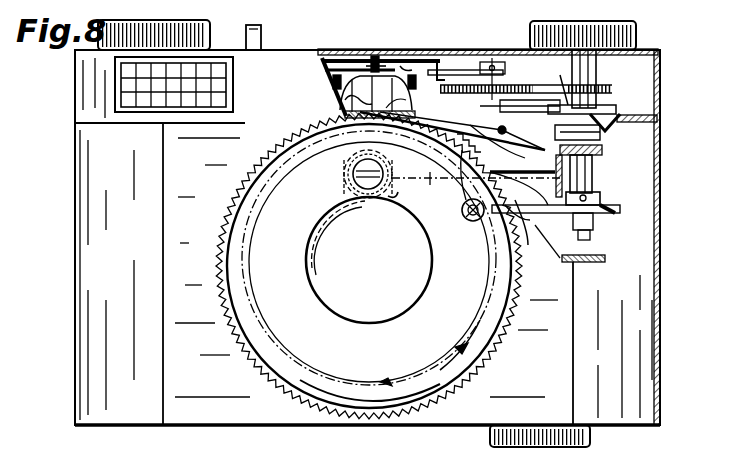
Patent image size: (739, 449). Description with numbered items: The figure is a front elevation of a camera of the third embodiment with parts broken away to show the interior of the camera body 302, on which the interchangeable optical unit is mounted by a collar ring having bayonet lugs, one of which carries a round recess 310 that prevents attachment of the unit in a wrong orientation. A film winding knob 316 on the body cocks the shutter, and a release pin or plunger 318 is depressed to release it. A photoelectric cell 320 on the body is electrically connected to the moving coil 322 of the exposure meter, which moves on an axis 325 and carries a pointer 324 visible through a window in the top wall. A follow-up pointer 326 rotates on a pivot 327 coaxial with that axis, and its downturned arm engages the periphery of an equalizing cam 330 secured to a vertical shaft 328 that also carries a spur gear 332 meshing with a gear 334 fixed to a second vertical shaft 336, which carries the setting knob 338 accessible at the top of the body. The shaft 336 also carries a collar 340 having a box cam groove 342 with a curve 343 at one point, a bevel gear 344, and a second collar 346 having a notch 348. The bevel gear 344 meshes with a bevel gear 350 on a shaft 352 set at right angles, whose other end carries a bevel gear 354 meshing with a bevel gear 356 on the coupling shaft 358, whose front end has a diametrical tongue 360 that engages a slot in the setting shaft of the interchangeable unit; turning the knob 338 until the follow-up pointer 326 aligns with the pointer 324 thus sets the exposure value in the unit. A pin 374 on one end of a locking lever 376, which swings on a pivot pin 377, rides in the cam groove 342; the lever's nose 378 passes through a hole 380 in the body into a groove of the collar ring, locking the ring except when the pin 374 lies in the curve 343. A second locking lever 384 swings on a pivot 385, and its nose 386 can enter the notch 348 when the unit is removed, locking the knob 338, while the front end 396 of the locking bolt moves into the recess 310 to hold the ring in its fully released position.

The camera body 302 is at (90, 92).
The round recess 310 is at (460, 345).
The film winding knob 316 is at (205, 34).
The release pin or plunger 318 is at (258, 28).
The photoelectric cell 320 is at (143, 102).
The moving coil 322 is at (332, 88).
The pointer 324 is at (330, 58).
The axis 325 is at (350, 56).
The follow-up pointer 326 is at (413, 58).
The pivot 327 is at (375, 58).
The vertical shaft 328 is at (500, 70).
The equalizing cam 330 is at (450, 58).
The spur gear 332 is at (472, 58).
The gear 334 is at (560, 96).
The vertical shaft 336 is at (600, 66).
The setting knob 338 is at (630, 33).
The collar 340 is at (610, 135).
The box cam groove 342 is at (616, 128).
The curve 343 is at (604, 148).
The bevel gear 344 is at (589, 176).
The second collar 346 is at (602, 205).
The notch 348 is at (592, 215).
The bevel gear 350 is at (522, 188).
The shaft 352 is at (430, 180).
The bevel gear 354 is at (395, 198).
The bevel gear 356 is at (345, 173).
The coupling shaft 358 is at (368, 192).
The diametrical tongue or tooth 360 is at (353, 183).
The pin 374 is at (614, 108).
The locking lever 376 is at (525, 127).
The pivot pin 377 is at (520, 136).
The nose 378 is at (343, 101).
The hole 380 is at (388, 107).
The second locking lever 384 is at (546, 251).
The pivot 385 is at (530, 226).
The nose 386 is at (592, 242).
The front end 396 is at (468, 220).